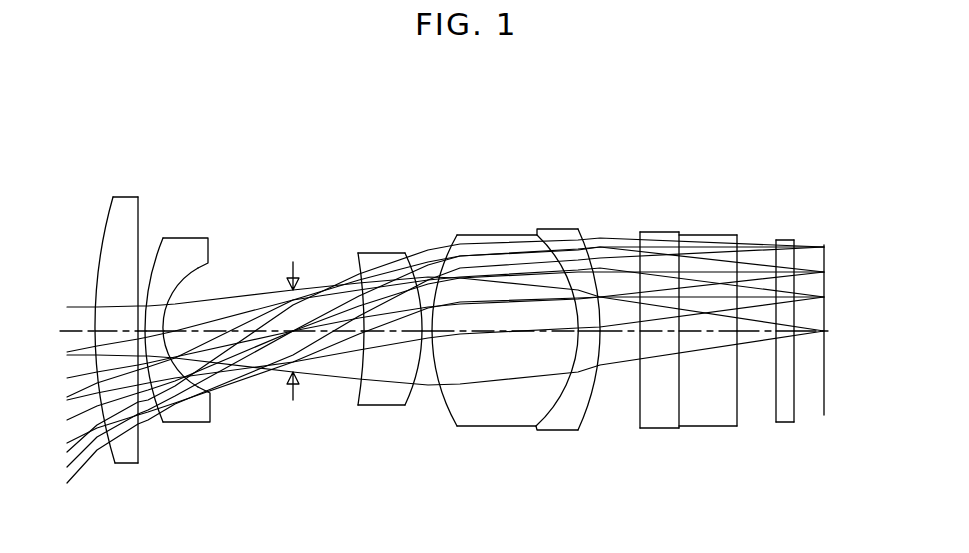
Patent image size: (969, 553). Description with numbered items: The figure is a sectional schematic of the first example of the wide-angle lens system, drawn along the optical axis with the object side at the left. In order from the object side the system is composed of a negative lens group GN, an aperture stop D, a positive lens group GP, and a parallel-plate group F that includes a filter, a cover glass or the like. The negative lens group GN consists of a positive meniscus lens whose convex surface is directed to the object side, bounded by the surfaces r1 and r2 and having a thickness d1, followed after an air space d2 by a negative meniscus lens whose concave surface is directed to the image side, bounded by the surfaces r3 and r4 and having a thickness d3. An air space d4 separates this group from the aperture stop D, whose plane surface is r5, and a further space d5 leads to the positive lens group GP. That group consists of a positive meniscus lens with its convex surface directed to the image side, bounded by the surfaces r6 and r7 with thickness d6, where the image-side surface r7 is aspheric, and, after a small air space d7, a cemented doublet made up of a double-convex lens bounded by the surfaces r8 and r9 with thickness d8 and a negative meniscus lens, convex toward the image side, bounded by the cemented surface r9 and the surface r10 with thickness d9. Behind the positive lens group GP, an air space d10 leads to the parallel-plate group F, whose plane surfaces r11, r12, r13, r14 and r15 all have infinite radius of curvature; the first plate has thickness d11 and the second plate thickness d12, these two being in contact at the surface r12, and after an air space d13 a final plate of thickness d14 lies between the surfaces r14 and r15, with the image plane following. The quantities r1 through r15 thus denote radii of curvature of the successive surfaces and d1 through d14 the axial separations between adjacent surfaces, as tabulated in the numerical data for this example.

The negative lens group GN is at (217, 158).
The aperture stop D is at (303, 155).
The positive lens group GP is at (587, 157).
The parallel-plate group F is at (792, 157).
The radius of curvature of first lens surface r1 is at (107, 232).
The radius of curvature of second lens surface r2 is at (137, 226).
The radius of curvature of third lens surface r3 is at (153, 262).
The radius of curvature of fourth lens surface r4 is at (192, 268).
The radius of curvature of stop surface r5 is at (288, 298).
The radius of curvature of sixth lens surface r6 is at (360, 282).
The radius of curvature of seventh lens surface r7 is at (422, 273).
The radius of curvature of eighth lens surface r8 is at (443, 263).
The radius of curvature of ninth lens surface r9 is at (555, 243).
The radius of curvature of tenth lens surface r10 is at (592, 243).
The radius of curvature of eleventh surface r11 is at (640, 260).
The radius of curvature of twelfth surface r12 is at (679, 262).
The radius of curvature of thirteenth surface r13 is at (738, 258).
The radius of curvature of fourteenth surface r14 is at (775, 260).
The radius of curvature of fifteenth surface r15 is at (797, 257).
The separation between first and second lens surfaces d1 is at (118, 333).
The separation between second and third lens surfaces d2 is at (157, 333).
The separation between third and fourth lens surfaces d3 is at (167, 393).
The separation between fourth surface and stop d4 is at (240, 333).
The separation between stop and sixth surface d5 is at (332, 333).
The separation between sixth and seventh lens surfaces d6 is at (397, 333).
The separation between seventh and eighth lens surfaces d7 is at (428, 333).
The separation between eighth and ninth lens surfaces d8 is at (508, 333).
The separation between ninth and tenth lens surfaces d9 is at (589, 333).
The separation between tenth and eleventh surfaces d10 is at (620, 333).
The separation between eleventh and twelfth surfaces d11 is at (660, 333).
The separation between twelfth and thirteenth surfaces d12 is at (705, 333).
The separation between thirteenth and fourteenth surfaces d13 is at (757, 333).
The separation between fourteenth and fifteenth surfaces d14 is at (787, 333).